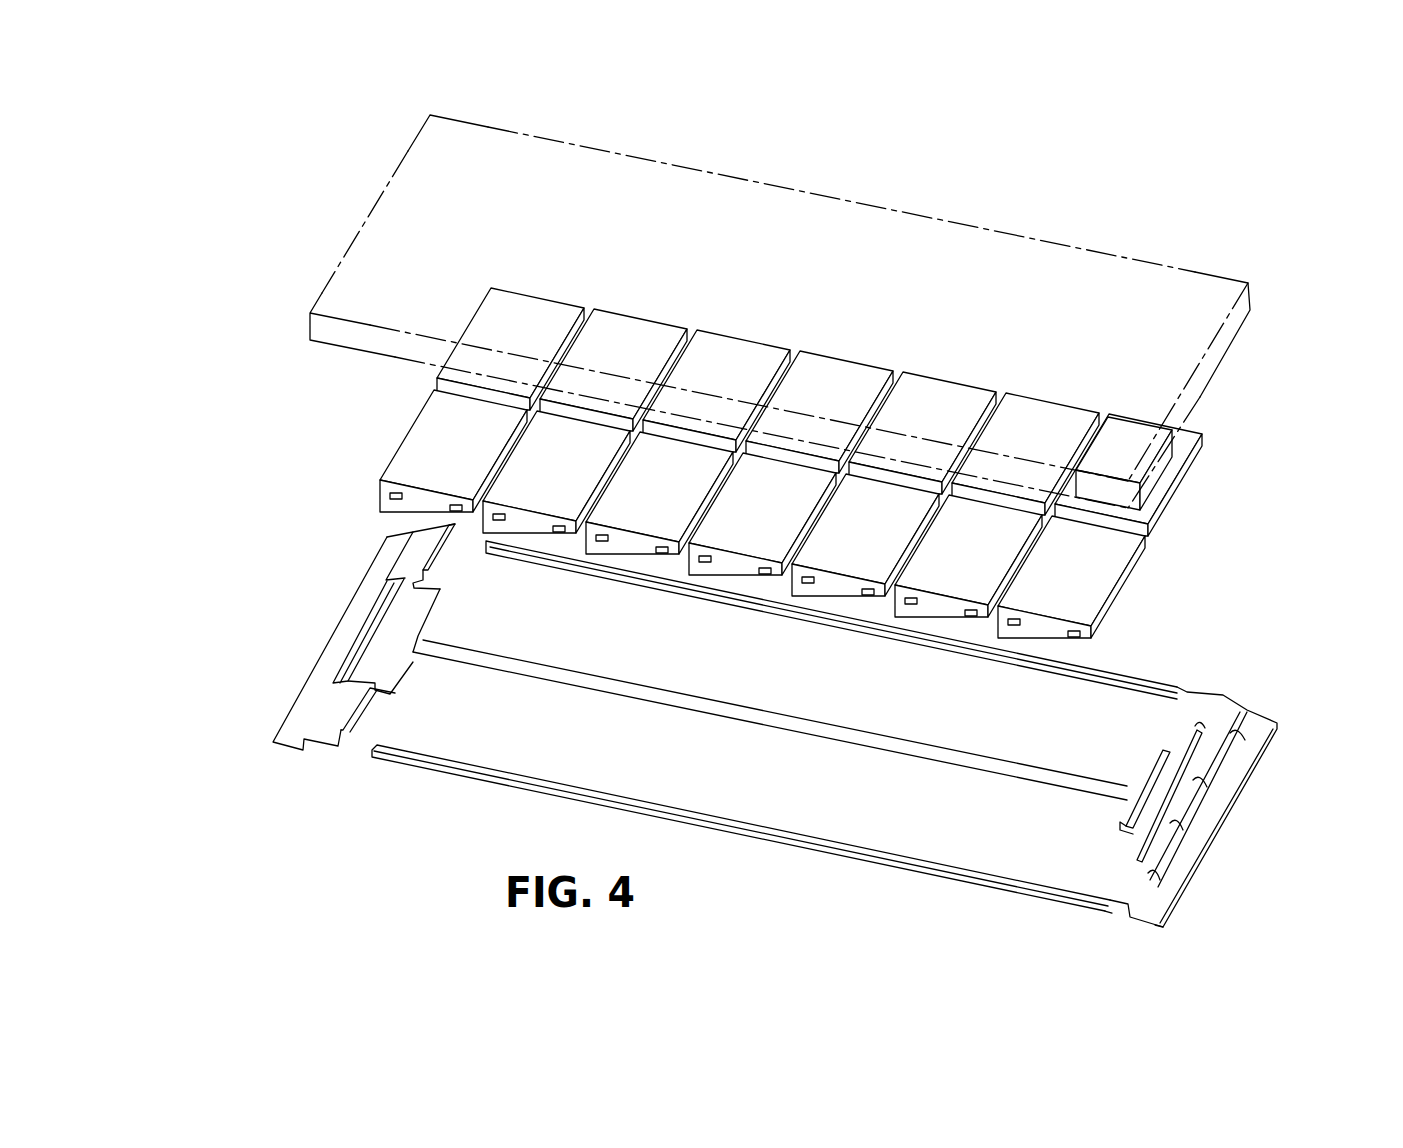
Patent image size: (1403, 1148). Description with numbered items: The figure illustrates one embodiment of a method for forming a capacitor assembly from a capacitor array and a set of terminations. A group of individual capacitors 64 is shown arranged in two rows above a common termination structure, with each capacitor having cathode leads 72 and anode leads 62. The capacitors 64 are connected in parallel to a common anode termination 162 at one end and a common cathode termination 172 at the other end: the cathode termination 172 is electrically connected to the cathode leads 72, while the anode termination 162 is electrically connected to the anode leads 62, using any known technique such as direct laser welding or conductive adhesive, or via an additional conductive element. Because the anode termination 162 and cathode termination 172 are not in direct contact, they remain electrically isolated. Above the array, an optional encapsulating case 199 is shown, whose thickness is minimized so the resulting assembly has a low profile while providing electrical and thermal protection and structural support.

The encapsulating case 199 is at (774, 197).
The cathode leads 72 is at (392, 497).
The anode leads 62 is at (1128, 532).
The individual capacitors 64 is at (1102, 583).
The anode termination 162 is at (340, 637).
The cathode termination 172 is at (1224, 708).